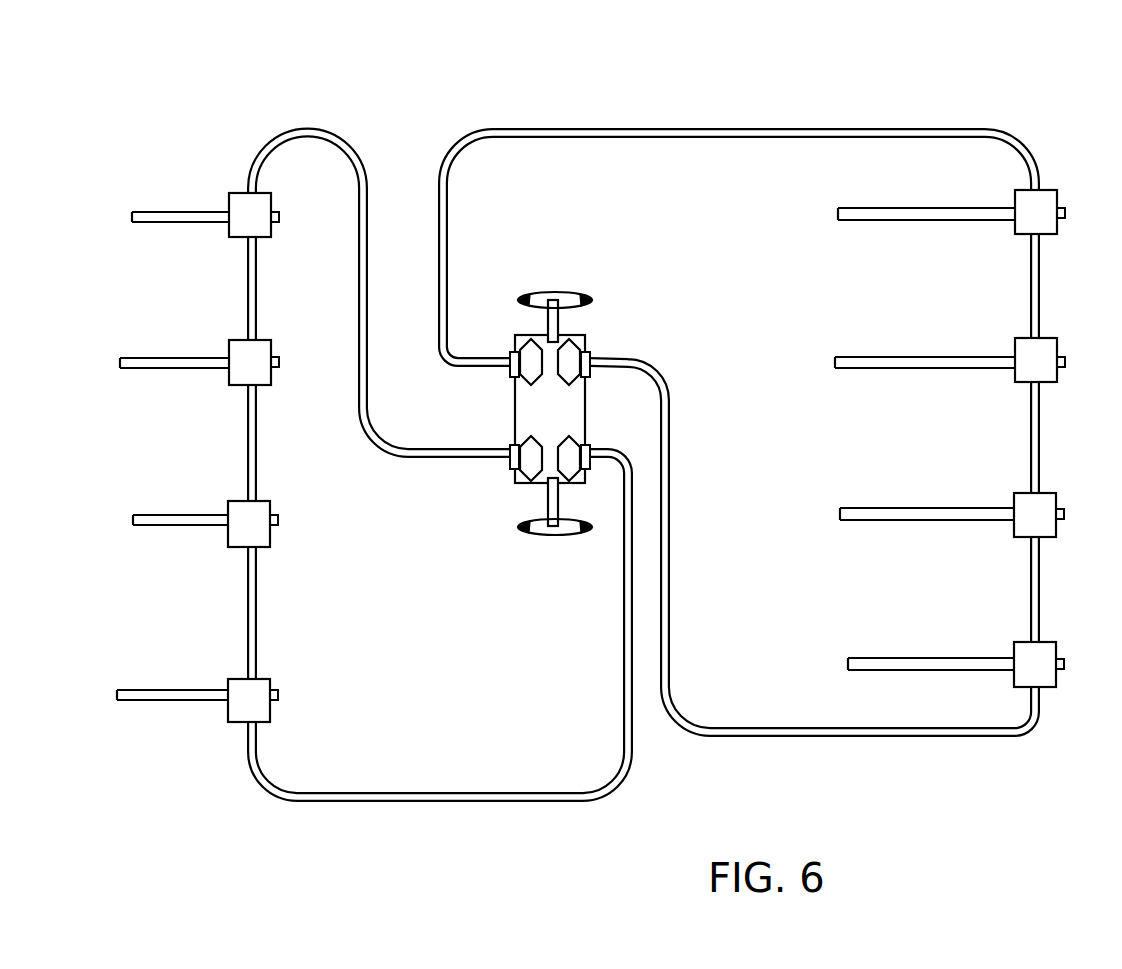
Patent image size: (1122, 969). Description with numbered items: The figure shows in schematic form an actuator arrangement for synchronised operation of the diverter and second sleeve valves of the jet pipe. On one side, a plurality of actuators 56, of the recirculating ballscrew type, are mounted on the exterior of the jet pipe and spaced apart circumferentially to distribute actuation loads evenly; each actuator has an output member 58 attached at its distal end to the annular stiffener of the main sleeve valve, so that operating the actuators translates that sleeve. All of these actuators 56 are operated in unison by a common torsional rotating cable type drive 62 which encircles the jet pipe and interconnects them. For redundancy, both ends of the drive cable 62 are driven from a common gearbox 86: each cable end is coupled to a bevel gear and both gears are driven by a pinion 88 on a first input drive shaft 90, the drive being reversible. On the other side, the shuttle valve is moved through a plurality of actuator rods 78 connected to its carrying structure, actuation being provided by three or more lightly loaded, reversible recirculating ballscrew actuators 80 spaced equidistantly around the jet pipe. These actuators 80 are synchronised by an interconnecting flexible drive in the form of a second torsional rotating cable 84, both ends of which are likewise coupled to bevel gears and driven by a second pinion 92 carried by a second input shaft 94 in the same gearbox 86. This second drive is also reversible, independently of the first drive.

The actuator 56 is at (230, 198).
The output member 58 is at (147, 212).
The torsional rotating cable type drive 62 is at (303, 128).
The actuator rod 78 is at (935, 222).
The recirculating ballscrew actuator 80 is at (1055, 233).
The second torsional rotating cable 84 is at (884, 128).
The gearbox 86 is at (515, 400).
The pinion 88 is at (542, 480).
The first input drive shaft 90 is at (560, 540).
The second pinion 92 is at (560, 338).
The second input shaft 94 is at (566, 300).